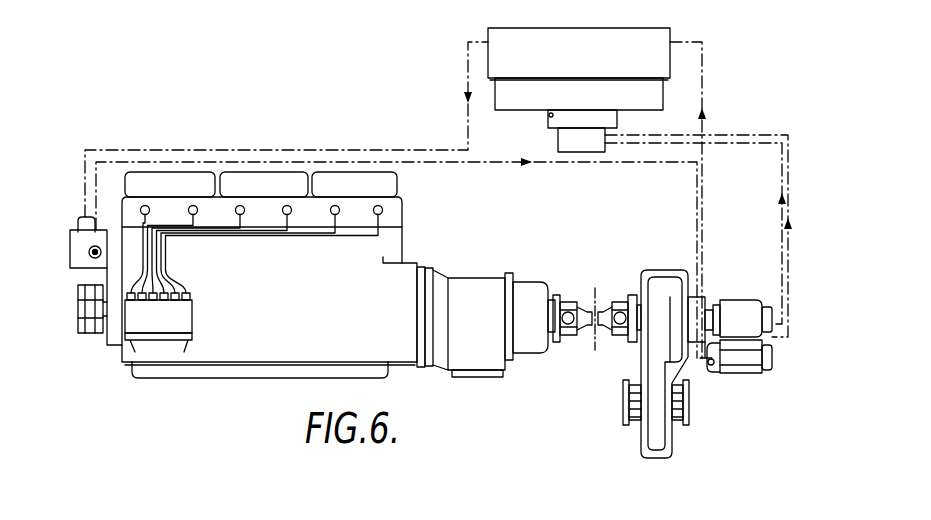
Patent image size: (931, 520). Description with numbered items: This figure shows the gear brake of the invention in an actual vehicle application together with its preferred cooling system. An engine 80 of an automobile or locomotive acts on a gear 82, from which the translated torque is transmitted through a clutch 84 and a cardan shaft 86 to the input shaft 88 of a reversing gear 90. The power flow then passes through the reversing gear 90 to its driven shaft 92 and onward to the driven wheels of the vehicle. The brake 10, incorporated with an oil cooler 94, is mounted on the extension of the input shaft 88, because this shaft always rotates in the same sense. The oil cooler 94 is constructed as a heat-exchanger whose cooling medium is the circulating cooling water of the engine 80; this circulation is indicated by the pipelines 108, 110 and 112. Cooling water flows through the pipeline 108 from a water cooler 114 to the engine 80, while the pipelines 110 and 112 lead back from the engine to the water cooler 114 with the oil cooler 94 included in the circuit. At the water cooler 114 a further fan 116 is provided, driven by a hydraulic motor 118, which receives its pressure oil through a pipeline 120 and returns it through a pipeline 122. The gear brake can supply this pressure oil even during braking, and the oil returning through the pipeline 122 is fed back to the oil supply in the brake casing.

The brake 10 is at (748, 316).
The engine 80 is at (249, 349).
The gear 82 is at (475, 345).
The clutch 84 is at (527, 338).
The cardan shaft 86 is at (587, 300).
The input shaft 88 is at (636, 294).
The reversing gear 90 is at (665, 297).
The driven shaft 92 is at (623, 396).
The oil cooler 94 is at (742, 366).
The pipeline 108 is at (276, 150).
The pipeline 110 is at (388, 162).
The pipeline 112 is at (723, 108).
The water cooler 114 is at (568, 52).
The fan 116 is at (549, 116).
The hydraulic motor 118 is at (565, 137).
The pipeline 120 is at (782, 170).
The pipeline 122 is at (787, 242).